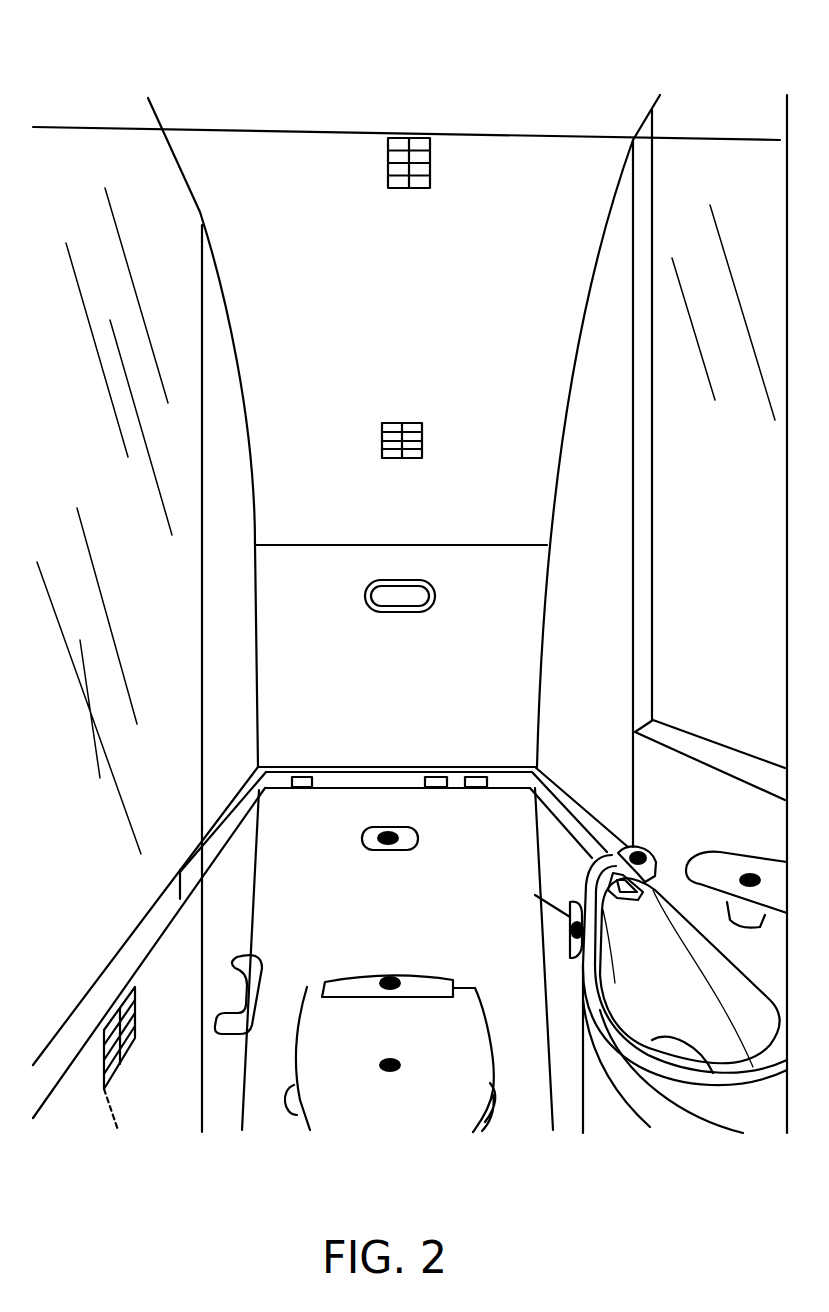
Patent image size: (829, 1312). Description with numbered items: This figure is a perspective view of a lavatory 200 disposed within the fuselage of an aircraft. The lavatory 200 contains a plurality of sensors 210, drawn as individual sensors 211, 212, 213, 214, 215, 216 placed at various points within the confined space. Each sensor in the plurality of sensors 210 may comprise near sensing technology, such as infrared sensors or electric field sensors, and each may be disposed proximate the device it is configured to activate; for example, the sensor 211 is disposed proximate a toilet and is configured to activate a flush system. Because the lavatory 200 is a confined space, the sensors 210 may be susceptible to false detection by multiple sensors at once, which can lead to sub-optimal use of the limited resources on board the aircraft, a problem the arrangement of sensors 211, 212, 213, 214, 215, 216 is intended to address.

The lavatory 200 is at (210, 90).
The plurality of sensors 210 is at (316, 576).
The sensor 211 is at (388, 832).
The sensor 212 is at (390, 978).
The sensor 213 is at (388, 1060).
The sensor 214 is at (574, 924).
The sensor 215 is at (636, 850).
The sensor 216 is at (750, 874).